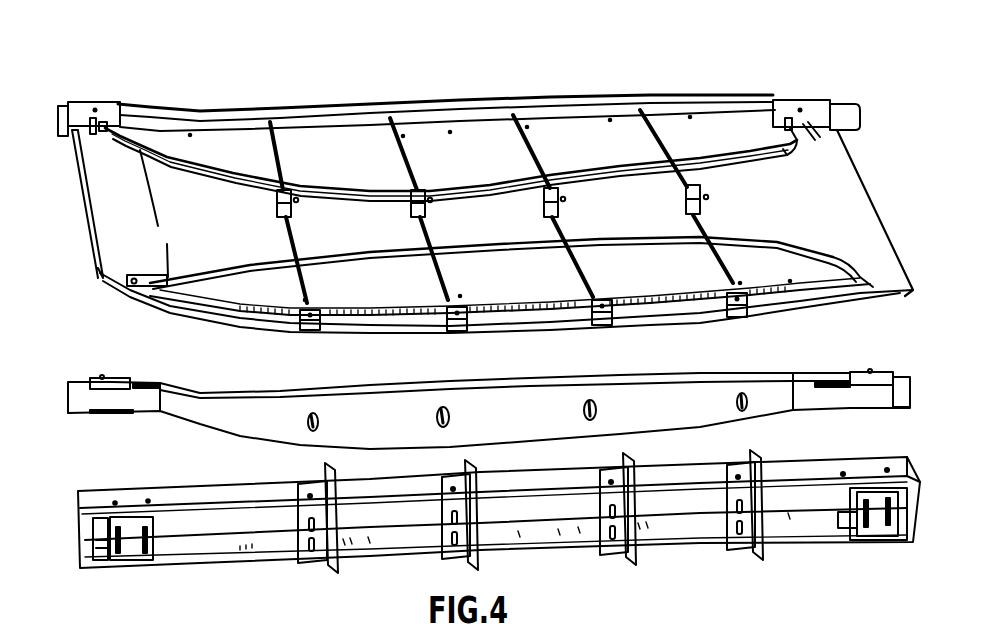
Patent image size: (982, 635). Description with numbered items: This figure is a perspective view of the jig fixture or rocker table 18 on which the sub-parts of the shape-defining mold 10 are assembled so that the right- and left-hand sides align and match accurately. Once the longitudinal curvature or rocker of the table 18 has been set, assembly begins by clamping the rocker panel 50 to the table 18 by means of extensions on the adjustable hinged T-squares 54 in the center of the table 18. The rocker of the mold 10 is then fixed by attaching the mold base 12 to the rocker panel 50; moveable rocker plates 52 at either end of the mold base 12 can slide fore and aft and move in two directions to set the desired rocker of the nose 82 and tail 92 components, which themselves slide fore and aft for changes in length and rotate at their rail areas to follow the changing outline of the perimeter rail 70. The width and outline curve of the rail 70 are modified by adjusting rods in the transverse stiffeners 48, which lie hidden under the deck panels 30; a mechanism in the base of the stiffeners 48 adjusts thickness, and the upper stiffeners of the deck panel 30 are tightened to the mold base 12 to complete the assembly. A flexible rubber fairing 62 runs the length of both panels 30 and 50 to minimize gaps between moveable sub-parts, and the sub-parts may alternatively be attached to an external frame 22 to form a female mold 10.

The shape-defining mold 10 is at (628, 61).
The mold base 12 is at (423, 103).
The jig fixture or table 18 is at (880, 227).
The external frame 22 is at (132, 498).
The deck panel 30 is at (562, 140).
The transverse stiffeners 48 is at (303, 320).
The rocker panel 50 is at (513, 316).
The rocker plates 52 is at (105, 105).
The adjustable hinged T-squares 54 is at (280, 207).
The flexible rubber fairing 62 is at (730, 155).
The perimeter rail 70 is at (703, 175).
The molded nose 82 is at (152, 218).
The tail block 92 is at (789, 148).